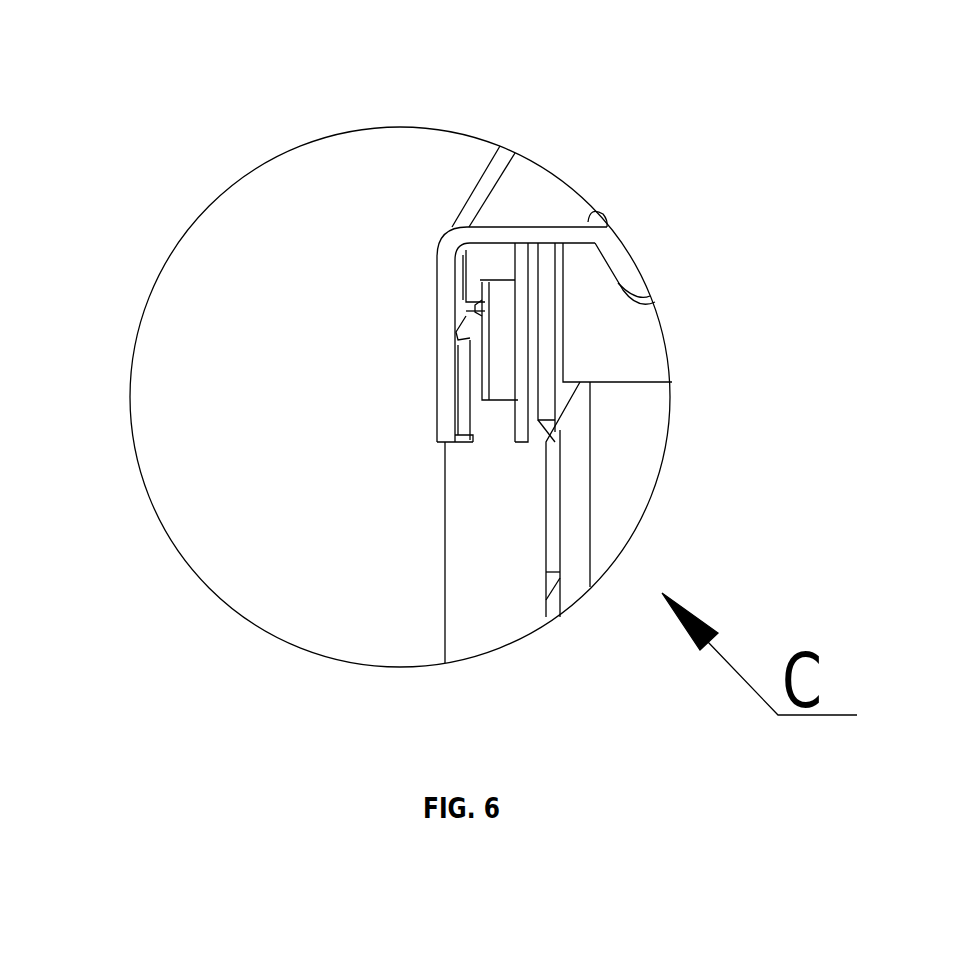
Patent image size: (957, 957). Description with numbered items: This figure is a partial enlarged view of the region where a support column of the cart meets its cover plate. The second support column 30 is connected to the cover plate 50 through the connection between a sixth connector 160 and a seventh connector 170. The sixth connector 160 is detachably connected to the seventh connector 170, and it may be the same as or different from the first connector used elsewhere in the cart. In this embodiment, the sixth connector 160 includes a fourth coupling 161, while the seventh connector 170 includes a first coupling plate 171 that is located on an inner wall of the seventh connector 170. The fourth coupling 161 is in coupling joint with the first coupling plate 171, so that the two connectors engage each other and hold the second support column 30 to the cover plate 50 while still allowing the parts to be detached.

The second support column 30 is at (505, 520).
The cover plate 50 is at (537, 205).
The sixth connector 160 is at (490, 418).
The fourth coupling 161 is at (475, 330).
The seventh connector 170 is at (472, 268).
The first coupling plate 171 is at (457, 342).